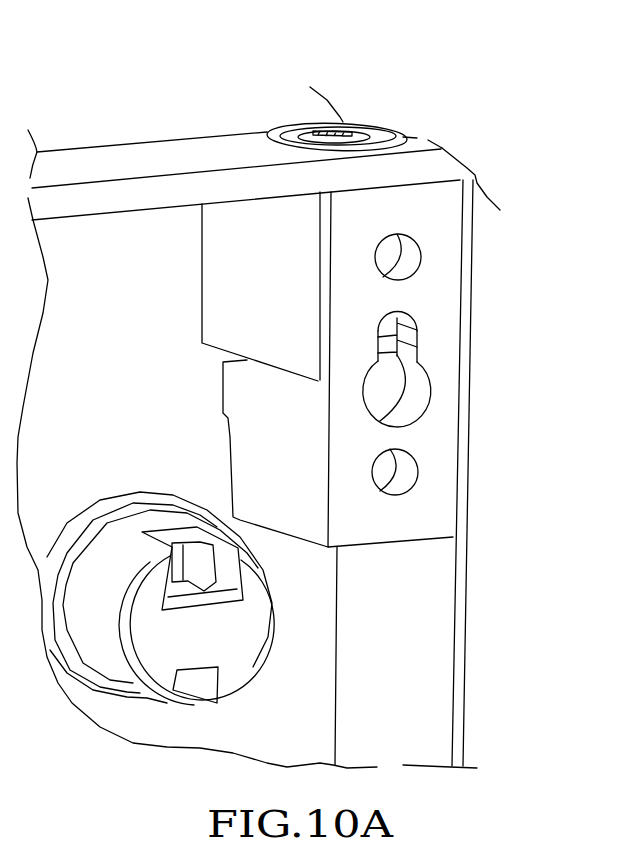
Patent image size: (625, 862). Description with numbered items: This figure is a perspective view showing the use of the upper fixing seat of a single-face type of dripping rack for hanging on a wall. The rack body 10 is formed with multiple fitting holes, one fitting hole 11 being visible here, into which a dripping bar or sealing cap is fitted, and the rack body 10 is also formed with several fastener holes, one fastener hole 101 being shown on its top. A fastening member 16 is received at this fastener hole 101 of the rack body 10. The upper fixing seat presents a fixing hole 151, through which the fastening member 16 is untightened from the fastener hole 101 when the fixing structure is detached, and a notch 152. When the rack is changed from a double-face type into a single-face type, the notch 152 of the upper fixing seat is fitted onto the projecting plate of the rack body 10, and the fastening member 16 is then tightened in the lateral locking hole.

The rack body 10 is at (165, 143).
The fastener hole 101 is at (270, 138).
The fastening member 16 is at (310, 134).
The notch 152 is at (233, 357).
The fixing hole 151 is at (390, 488).
The fitting hole 11 is at (120, 673).